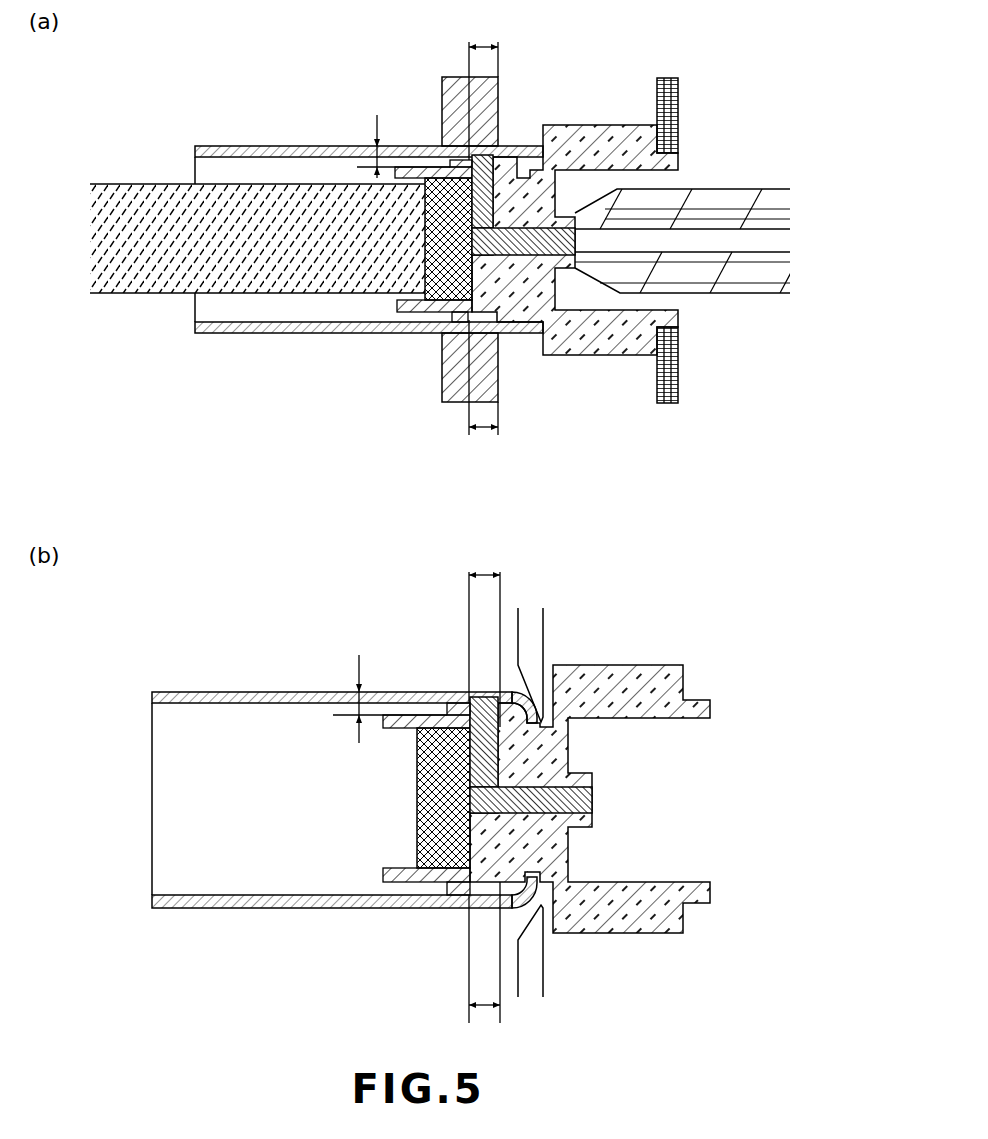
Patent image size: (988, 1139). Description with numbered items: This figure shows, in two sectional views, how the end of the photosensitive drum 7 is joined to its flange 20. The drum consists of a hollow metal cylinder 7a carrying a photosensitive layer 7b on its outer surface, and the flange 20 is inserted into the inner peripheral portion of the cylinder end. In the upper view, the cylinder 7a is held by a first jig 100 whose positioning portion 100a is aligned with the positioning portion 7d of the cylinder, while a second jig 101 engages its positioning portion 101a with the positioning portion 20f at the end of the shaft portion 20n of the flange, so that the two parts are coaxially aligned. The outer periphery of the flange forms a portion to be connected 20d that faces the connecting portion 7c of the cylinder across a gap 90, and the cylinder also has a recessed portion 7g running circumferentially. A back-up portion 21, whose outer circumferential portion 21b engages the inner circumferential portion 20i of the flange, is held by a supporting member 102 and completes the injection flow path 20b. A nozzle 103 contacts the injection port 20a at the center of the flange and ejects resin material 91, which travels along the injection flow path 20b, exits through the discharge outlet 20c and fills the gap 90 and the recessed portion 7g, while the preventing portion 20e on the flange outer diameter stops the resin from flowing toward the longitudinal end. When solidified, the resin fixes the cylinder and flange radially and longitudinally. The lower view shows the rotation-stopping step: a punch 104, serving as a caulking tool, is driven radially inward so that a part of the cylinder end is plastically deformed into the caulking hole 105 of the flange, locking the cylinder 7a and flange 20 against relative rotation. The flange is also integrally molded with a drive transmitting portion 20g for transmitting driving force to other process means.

The photosensitive drum 7 is at (238, 133).
The cylinder 7a is at (272, 150).
The photosensitive layer 7b is at (310, 146).
The connecting portion 7c is at (484, 519).
The positioning portion 7d is at (492, 375).
The recessed portion 7g is at (482, 152).
The flange 20 is at (567, 377).
The injection port 20a is at (577, 243).
The injection flow path 20b is at (588, 142).
The discharge outlet 20c is at (500, 148).
The portion to be connected 20d is at (485, 736).
The preventing portion 20e is at (455, 160).
The positioning portion 20f is at (680, 345).
The drive transmitting portion 20g is at (593, 357).
The inner circumferential portion 20i is at (462, 318).
The shaft portion 20n is at (625, 125).
The back-up portion 21 is at (345, 293).
The outer circumferential portion 21b is at (417, 307).
The gap 90 is at (387, 426).
The resin material 91 is at (575, 215).
The first jig 100 is at (467, 380).
The positioning portion 100a is at (447, 345).
The second jig 101 is at (676, 405).
The positioning portion 101a is at (676, 378).
The supporting member 102 is at (150, 272).
The nozzle 103 is at (710, 270).
The punch 104 is at (528, 642).
The caulking hole 105 is at (520, 333).